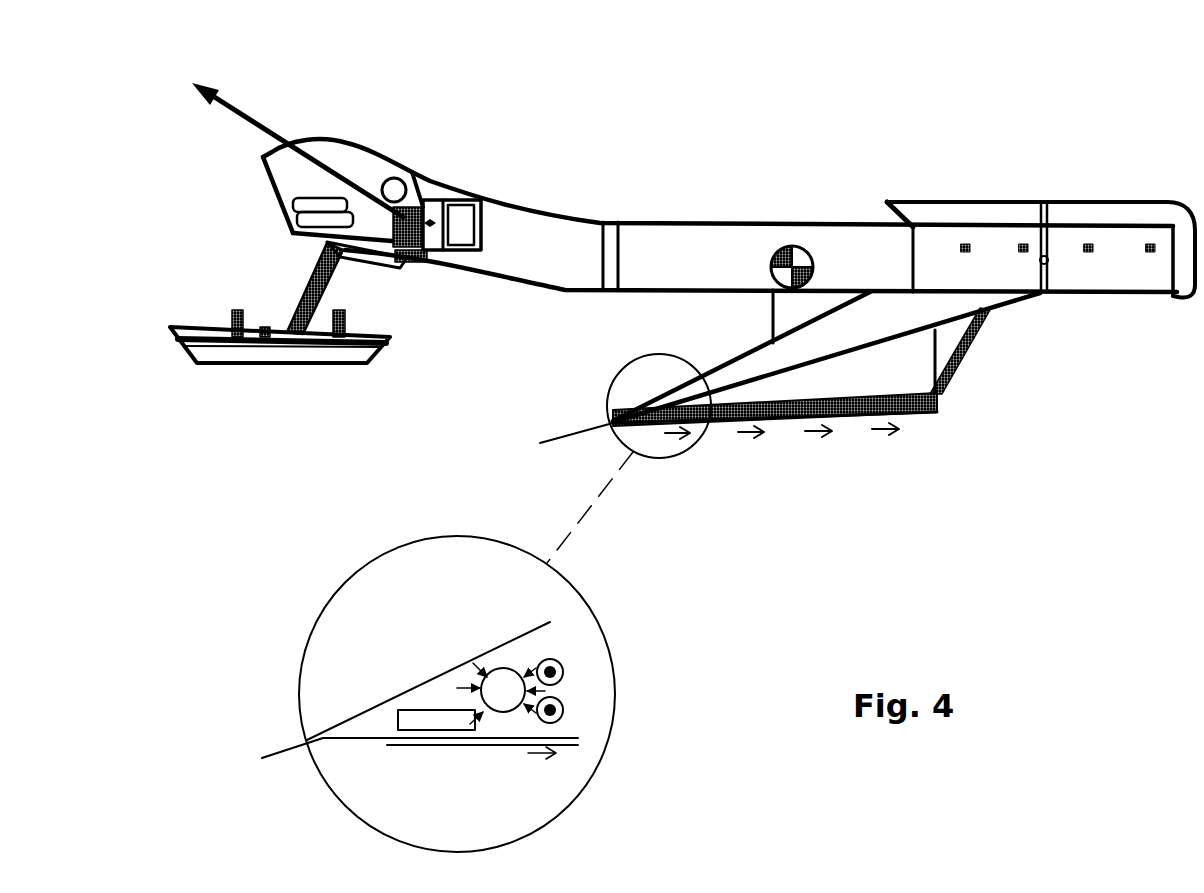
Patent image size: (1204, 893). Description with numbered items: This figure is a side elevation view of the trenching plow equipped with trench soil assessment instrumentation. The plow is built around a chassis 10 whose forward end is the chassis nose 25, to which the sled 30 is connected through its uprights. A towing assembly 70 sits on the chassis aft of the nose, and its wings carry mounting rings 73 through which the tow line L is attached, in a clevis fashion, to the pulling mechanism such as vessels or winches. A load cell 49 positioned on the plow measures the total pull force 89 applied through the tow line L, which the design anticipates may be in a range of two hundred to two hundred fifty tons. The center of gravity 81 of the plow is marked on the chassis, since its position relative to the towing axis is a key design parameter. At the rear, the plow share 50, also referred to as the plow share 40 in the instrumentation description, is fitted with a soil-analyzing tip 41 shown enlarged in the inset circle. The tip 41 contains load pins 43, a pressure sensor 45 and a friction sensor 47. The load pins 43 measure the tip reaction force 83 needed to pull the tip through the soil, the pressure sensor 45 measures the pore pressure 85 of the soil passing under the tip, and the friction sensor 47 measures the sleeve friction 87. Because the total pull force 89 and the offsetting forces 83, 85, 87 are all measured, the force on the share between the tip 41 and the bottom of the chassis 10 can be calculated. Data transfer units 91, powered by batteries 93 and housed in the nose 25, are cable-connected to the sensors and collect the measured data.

The chassis 10 is at (662, 192).
The chassis nose 25 is at (363, 145).
The tow line L is at (336, 160).
The sled 30 is at (295, 367).
The plow share 40 is at (903, 412).
The soil-analyzing tip 41 is at (628, 412).
The load pins 43 is at (565, 710).
The pressure sensor 45 is at (530, 668).
The friction sensor 47 is at (403, 705).
The load cell 49 is at (410, 172).
The plow share 50 is at (1003, 203).
The towing assembly 70 is at (480, 193).
The mounting rings 73 is at (398, 262).
The center of gravity 81 is at (793, 247).
The tip reaction force 83 is at (560, 438).
The pore pressure 85 is at (505, 666).
The sleeve friction 87 is at (504, 716).
The total pull force 89 is at (250, 112).
The data transfer units 91 is at (300, 197).
The batteries 93 is at (293, 233).